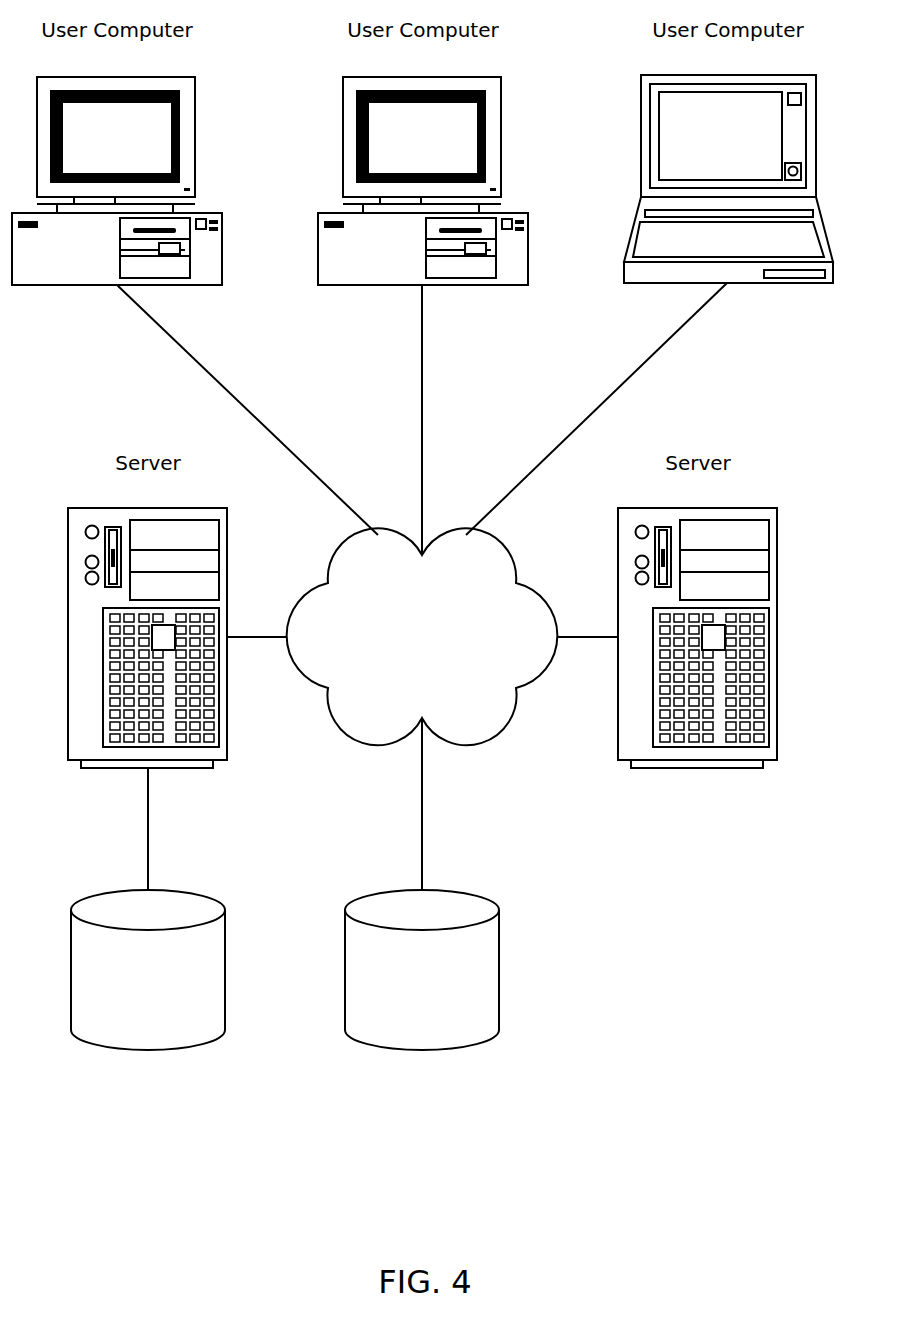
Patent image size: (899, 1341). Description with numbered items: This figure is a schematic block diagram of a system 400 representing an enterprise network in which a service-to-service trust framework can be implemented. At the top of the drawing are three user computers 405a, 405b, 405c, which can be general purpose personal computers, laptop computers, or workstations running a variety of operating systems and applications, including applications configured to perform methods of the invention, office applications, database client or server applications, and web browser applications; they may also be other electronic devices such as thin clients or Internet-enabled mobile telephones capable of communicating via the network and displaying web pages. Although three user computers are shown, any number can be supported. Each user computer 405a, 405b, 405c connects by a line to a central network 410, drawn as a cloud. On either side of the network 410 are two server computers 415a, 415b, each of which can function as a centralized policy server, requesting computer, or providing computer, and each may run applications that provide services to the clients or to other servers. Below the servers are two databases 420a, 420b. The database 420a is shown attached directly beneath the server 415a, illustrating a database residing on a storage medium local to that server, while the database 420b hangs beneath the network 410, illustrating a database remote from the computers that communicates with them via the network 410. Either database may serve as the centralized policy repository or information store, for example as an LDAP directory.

The system 400 is at (690, 1106).
The user computer 405a is at (222, 232).
The user computer 405b is at (317, 232).
The user computer 405c is at (641, 180).
The network 410 is at (461, 742).
The server computer 415a is at (68, 637).
The server computer 415b is at (777, 637).
The database 420a is at (148, 1050).
The database 420b is at (422, 1050).